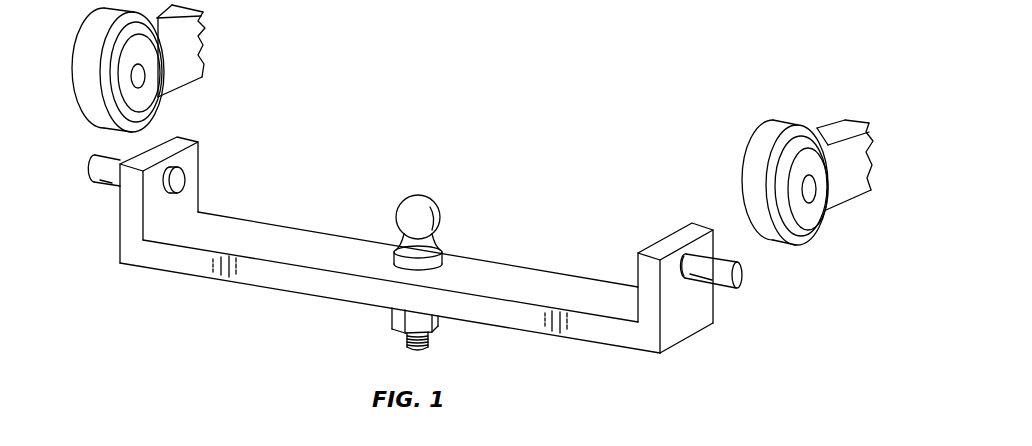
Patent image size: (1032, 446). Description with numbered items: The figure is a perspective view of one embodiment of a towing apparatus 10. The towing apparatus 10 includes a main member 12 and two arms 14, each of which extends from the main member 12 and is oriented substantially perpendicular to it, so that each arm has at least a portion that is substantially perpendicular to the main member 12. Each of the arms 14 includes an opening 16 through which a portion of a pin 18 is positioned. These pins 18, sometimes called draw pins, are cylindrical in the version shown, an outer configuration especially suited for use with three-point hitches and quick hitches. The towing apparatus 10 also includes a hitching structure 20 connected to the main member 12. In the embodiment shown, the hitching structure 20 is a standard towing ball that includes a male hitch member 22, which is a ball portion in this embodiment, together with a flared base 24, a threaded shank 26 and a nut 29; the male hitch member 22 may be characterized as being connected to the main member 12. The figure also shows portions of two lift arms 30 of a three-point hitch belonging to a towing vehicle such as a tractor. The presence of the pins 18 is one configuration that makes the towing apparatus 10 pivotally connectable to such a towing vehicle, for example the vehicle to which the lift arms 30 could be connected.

The towing apparatus 10 is at (637, 174).
The main member 12 is at (530, 277).
The arms 14 is at (130, 228).
The opening 16 is at (162, 177).
The pin 18 is at (97, 170).
The hitching structure 20 is at (415, 215).
The male hitch member 22 is at (397, 220).
The flared base 24 is at (437, 249).
The threaded shank 26 is at (404, 336).
The nut 29 is at (390, 316).
The lift arms 30 is at (189, 64).